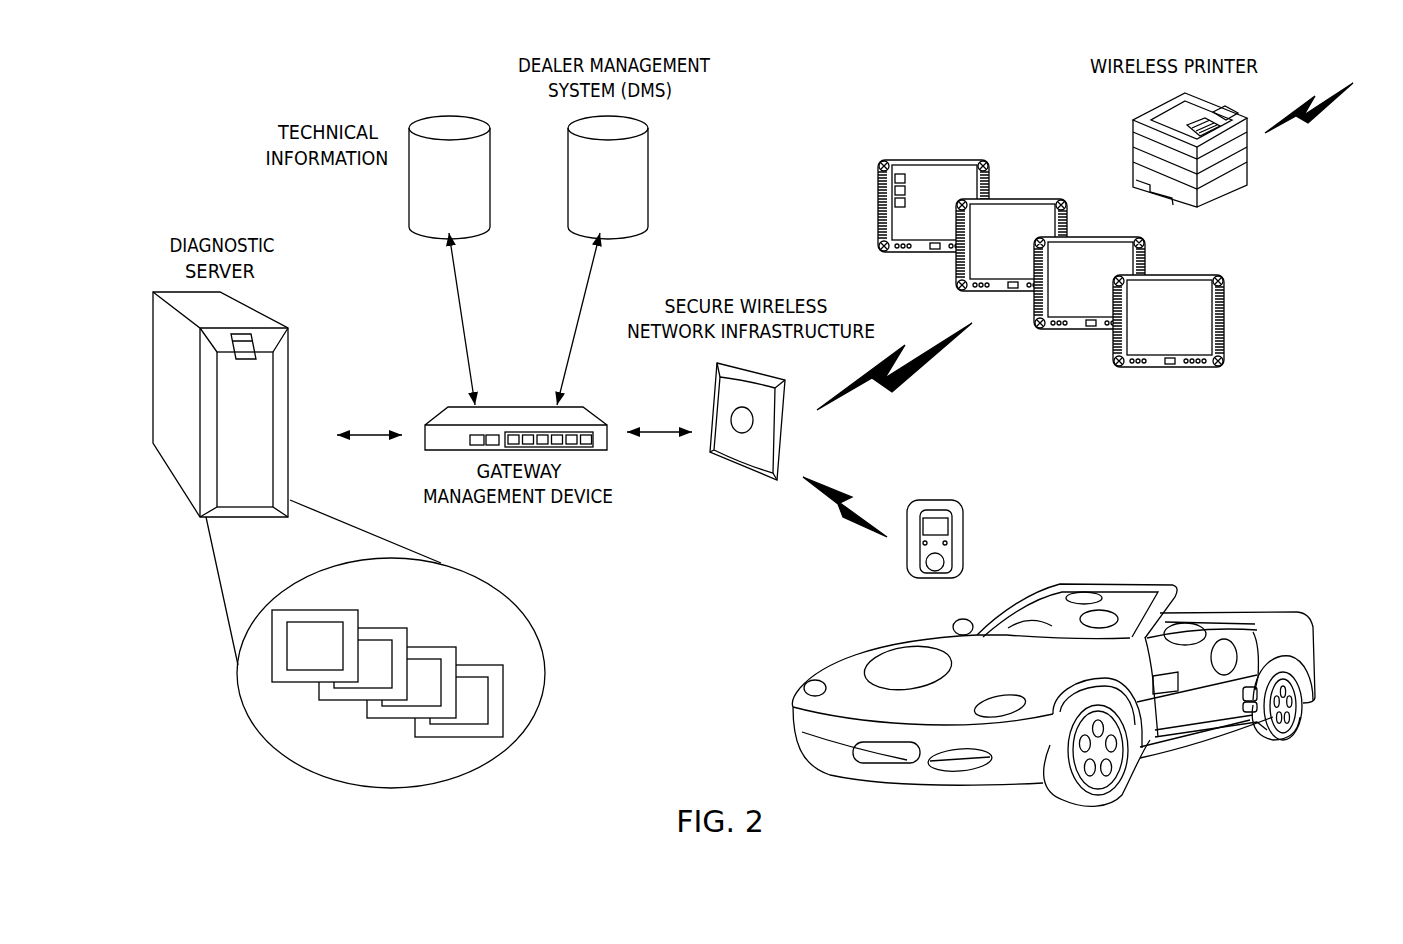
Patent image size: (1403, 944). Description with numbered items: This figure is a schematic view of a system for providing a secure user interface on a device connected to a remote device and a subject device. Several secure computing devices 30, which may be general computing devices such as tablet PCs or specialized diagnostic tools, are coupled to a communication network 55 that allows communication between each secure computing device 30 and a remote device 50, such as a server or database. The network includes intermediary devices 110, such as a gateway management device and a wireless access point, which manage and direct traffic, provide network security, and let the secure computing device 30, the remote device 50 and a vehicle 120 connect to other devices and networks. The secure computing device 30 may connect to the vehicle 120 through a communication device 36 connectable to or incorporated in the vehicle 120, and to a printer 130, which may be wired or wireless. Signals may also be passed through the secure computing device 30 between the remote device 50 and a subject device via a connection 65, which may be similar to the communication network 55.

The secure computing device 30 is at (938, 158).
The communication device 36 is at (963, 520).
The remote device 50 is at (168, 463).
The communication network 55 is at (371, 432).
The connection 65 is at (950, 365).
The intermediary device 110 is at (511, 405).
The vehicle 120 is at (1190, 753).
The printer 130 is at (1223, 192).